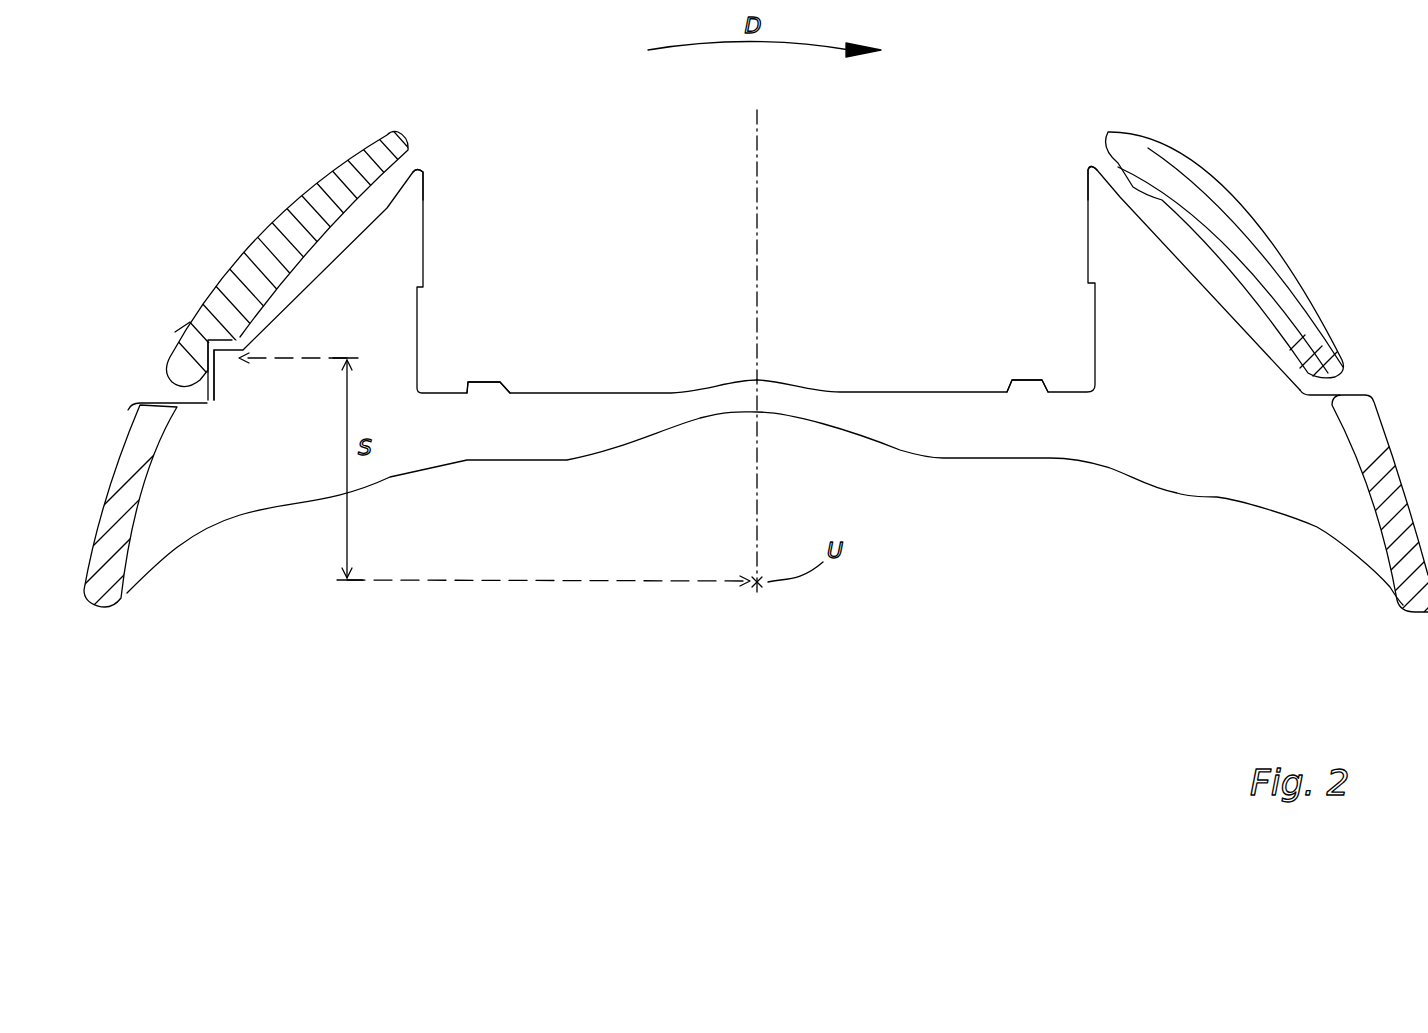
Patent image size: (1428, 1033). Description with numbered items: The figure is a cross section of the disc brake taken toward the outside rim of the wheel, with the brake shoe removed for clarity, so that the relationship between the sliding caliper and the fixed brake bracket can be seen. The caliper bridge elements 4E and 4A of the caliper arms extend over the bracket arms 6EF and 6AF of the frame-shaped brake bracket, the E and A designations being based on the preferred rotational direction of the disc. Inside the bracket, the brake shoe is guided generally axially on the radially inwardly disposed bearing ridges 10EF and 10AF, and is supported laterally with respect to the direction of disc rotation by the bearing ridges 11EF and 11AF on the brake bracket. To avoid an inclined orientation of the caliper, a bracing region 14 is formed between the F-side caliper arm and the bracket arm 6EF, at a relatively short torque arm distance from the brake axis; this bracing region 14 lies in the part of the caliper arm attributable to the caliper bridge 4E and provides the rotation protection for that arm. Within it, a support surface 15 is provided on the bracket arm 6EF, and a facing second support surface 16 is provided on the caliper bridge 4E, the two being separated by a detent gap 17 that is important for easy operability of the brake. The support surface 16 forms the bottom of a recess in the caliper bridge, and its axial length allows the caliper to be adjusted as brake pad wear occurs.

The caliper bridge element 4E is at (267, 253).
The caliper bridge element 4A is at (1217, 227).
The bracket arm 6EF is at (350, 297).
The bracket arm 6AF is at (1113, 288).
The bearing ridge 10EF is at (489, 393).
The bearing ridge 10AF is at (1027, 388).
The bearing ridge 11EF is at (428, 200).
The bearing ridge 11AF is at (1084, 180).
The bracing region 14 is at (178, 328).
The support surface 15 is at (218, 374).
The second support surface 16 is at (205, 367).
The detent gap 17 is at (212, 395).